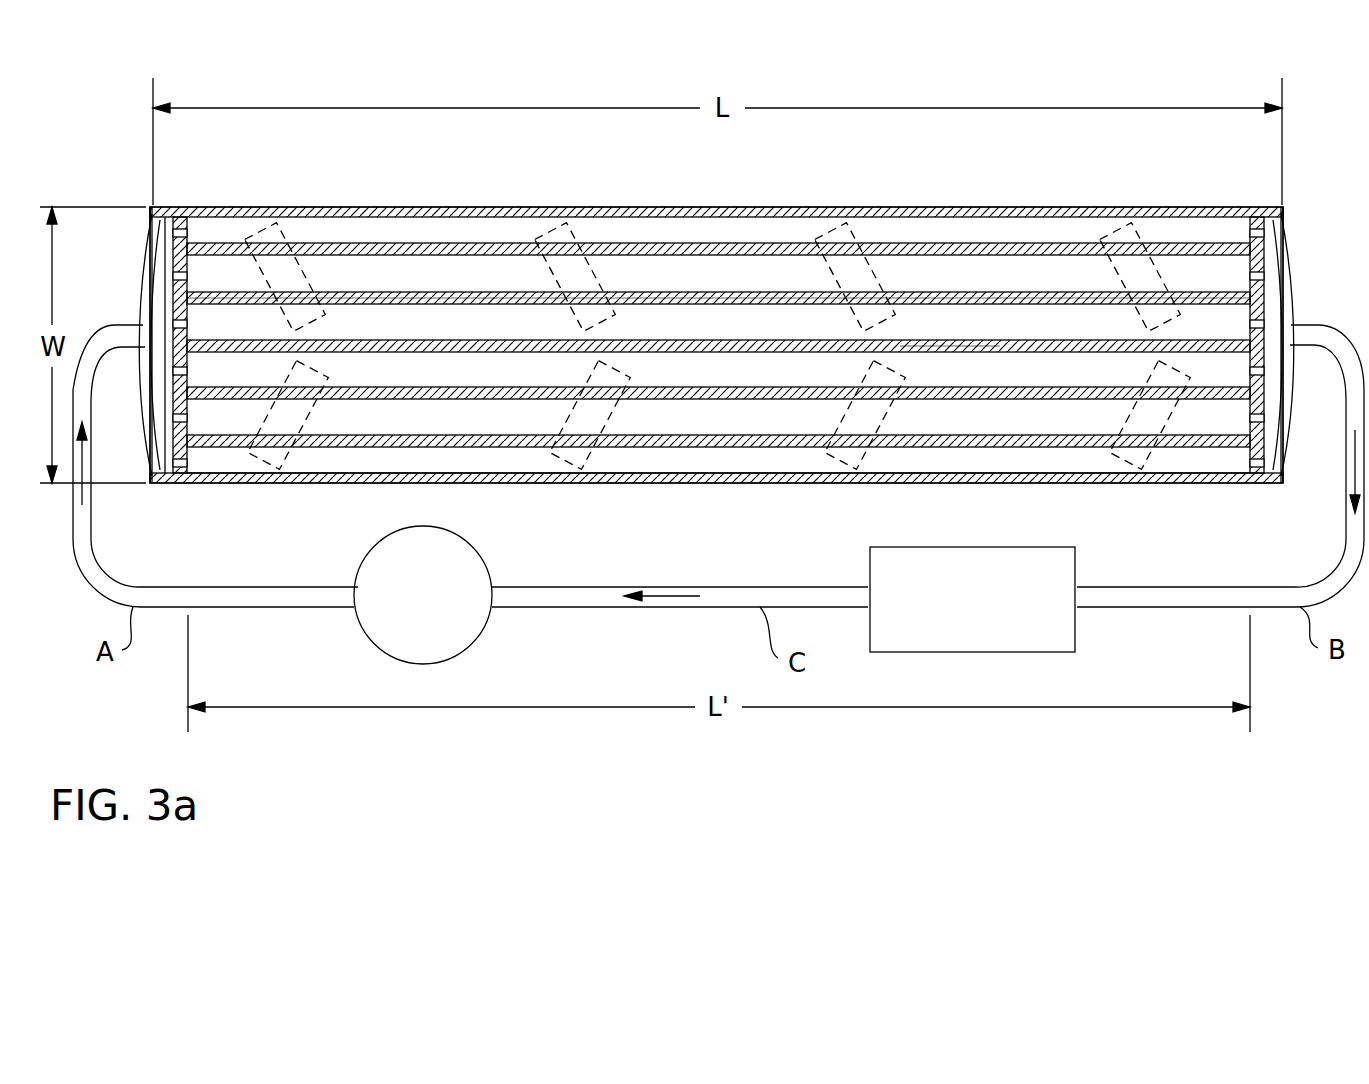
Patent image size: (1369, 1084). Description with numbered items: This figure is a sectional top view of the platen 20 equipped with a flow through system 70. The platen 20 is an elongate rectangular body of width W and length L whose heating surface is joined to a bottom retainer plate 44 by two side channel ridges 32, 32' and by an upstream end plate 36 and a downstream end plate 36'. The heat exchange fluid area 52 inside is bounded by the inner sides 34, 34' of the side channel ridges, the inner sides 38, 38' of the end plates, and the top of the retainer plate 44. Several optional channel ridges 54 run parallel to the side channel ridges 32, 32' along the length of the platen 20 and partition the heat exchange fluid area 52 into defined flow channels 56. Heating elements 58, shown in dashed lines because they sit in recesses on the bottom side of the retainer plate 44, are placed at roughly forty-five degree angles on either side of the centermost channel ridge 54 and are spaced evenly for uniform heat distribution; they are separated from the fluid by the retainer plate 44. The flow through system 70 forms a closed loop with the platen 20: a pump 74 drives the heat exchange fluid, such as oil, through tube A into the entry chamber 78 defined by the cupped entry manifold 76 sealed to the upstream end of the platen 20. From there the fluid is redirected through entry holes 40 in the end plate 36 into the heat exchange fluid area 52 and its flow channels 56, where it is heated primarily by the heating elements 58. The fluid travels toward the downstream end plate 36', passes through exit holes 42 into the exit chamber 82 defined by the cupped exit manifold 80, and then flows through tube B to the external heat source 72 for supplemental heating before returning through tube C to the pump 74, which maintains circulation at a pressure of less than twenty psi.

The platen 20 is at (452, 494).
The side channel ridge 32 is at (716, 181).
The side channel ridge 32' is at (716, 507).
The inner side of side channel ridge 34 is at (192, 313).
The inner side of side channel ridge 34' is at (221, 377).
The end plate 36 is at (214, 345).
The end plate 36' is at (1306, 345).
The inner side of end plate 38 is at (176, 390).
The inner side of end plate 38' is at (1233, 325).
The entry holes 40 is at (172, 262).
The exit holes 42 is at (1266, 263).
The retainer plate 44 is at (1028, 225).
The heat exchange fluid area 52 is at (655, 485).
The channel ridges 54 is at (350, 297).
The flow channels 56 is at (945, 440).
The heating elements 58 is at (265, 225).
The flow through system 70 is at (548, 607).
The external heat source 72 is at (980, 652).
The pump 74 is at (470, 651).
The entry manifold 76 is at (130, 217).
The entry chamber 78 is at (138, 320).
The exit manifold 80 is at (1292, 483).
The exit chamber 82 is at (1290, 217).